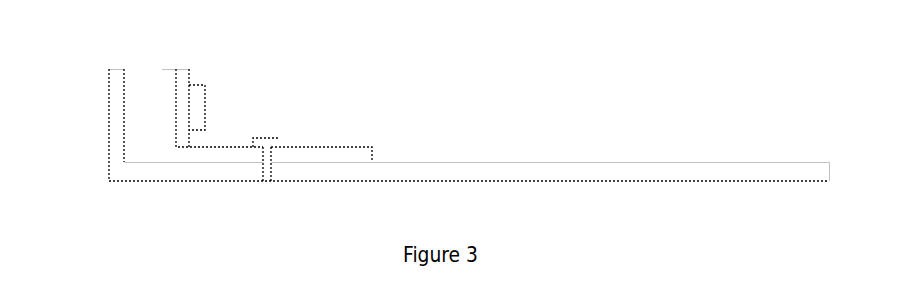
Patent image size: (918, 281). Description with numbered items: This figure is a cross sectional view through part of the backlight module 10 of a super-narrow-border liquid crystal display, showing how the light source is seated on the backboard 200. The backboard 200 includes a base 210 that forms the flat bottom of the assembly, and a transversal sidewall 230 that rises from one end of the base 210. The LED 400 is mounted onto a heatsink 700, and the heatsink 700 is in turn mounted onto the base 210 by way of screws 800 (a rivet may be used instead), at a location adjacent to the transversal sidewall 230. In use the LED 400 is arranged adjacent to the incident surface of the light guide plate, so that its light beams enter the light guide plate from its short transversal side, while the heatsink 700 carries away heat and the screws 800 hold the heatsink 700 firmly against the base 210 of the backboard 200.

The backlight module 10 is at (117, 52).
The backboard 200 is at (108, 182).
The base 210 is at (404, 184).
The transversal sidewall 230 is at (109, 118).
The LED 400 is at (206, 84).
The heatsink 700 is at (373, 147).
The screws 800 is at (281, 138).